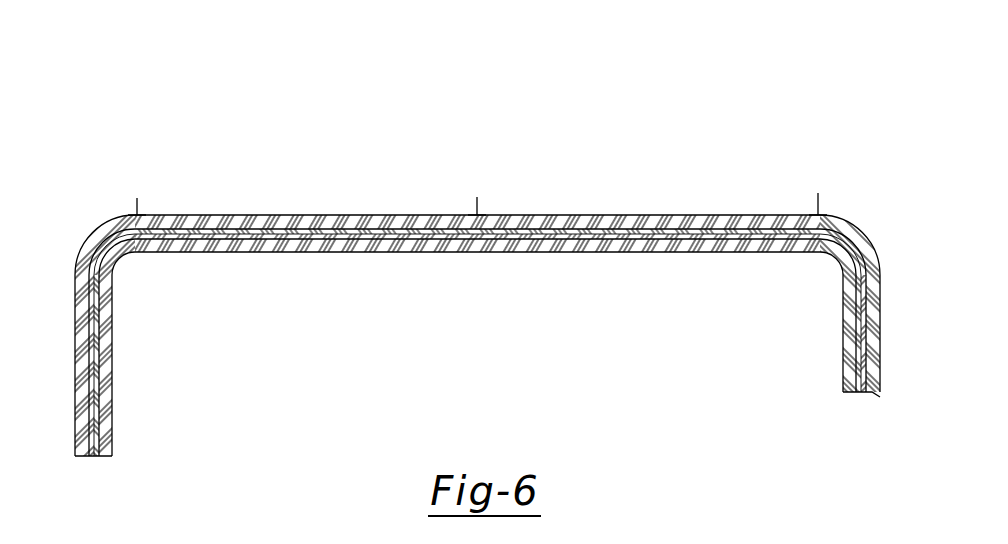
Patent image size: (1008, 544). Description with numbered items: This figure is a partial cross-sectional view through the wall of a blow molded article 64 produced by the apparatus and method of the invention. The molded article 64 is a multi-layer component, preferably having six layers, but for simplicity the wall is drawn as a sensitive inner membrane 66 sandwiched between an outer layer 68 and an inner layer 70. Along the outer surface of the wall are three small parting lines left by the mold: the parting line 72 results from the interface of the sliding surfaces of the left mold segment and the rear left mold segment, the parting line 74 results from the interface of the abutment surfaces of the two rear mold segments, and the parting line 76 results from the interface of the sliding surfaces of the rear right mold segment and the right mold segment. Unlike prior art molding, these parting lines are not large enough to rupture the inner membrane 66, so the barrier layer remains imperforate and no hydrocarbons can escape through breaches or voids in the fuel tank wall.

The molded article 64 is at (106, 206).
The inner membrane 66 is at (600, 231).
The outer layer 68 is at (716, 218).
The inner layer 70 is at (720, 243).
The parting line 72 is at (138, 210).
The parting line 74 is at (476, 210).
The parting line 76 is at (815, 208).